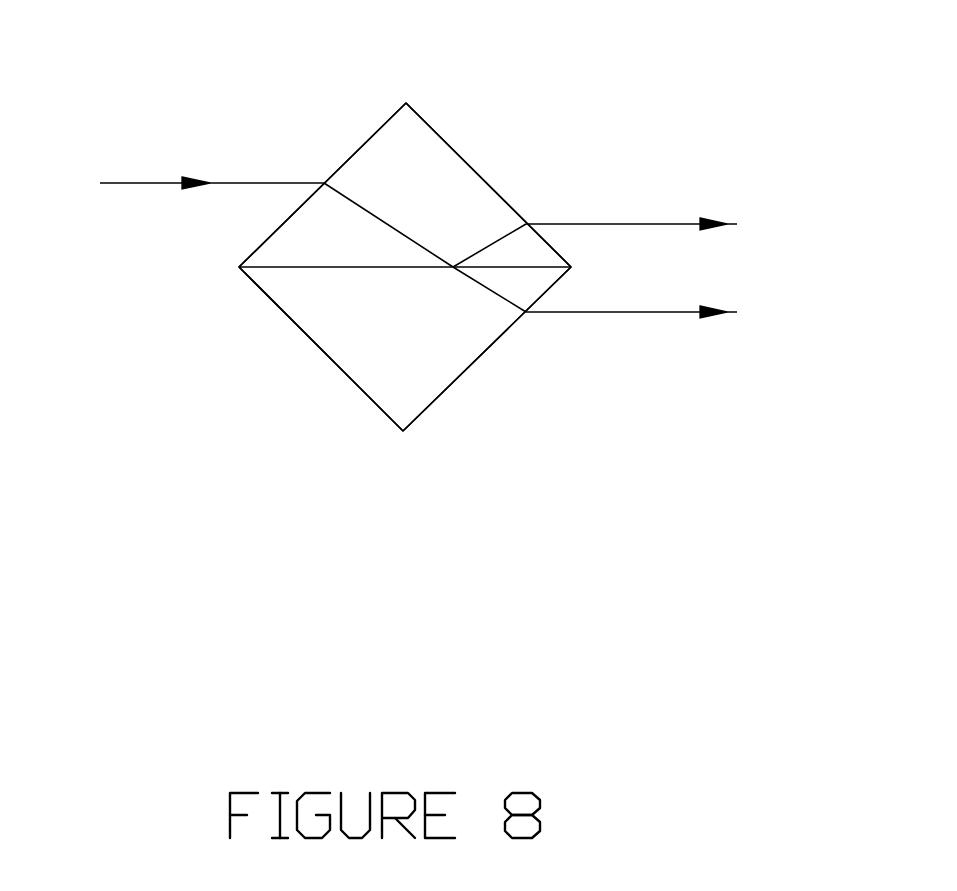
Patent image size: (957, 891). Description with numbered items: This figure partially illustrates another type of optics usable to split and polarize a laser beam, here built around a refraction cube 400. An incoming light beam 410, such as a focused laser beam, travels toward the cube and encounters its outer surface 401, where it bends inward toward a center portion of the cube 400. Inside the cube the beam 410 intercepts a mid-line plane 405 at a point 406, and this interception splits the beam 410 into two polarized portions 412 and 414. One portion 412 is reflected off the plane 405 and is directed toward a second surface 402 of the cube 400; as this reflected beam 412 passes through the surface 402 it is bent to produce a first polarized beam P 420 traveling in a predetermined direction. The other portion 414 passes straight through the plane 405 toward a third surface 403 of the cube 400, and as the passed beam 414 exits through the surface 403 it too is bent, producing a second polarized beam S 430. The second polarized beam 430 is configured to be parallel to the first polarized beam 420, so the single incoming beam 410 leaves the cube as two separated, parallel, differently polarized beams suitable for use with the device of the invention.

The refraction cube 400 is at (430, 122).
The outer surface 401 is at (363, 142).
The second surface 402 is at (487, 177).
The third surface 403 is at (430, 405).
The mid-line plane 405 is at (320, 268).
The point 406 is at (451, 270).
The incoming light beam 410 is at (137, 183).
The reflected polarized portion 412 is at (490, 245).
The passed polarized portion 414 is at (488, 293).
The first polarized beam P 420 is at (650, 224).
The second polarized beam S 430 is at (648, 314).